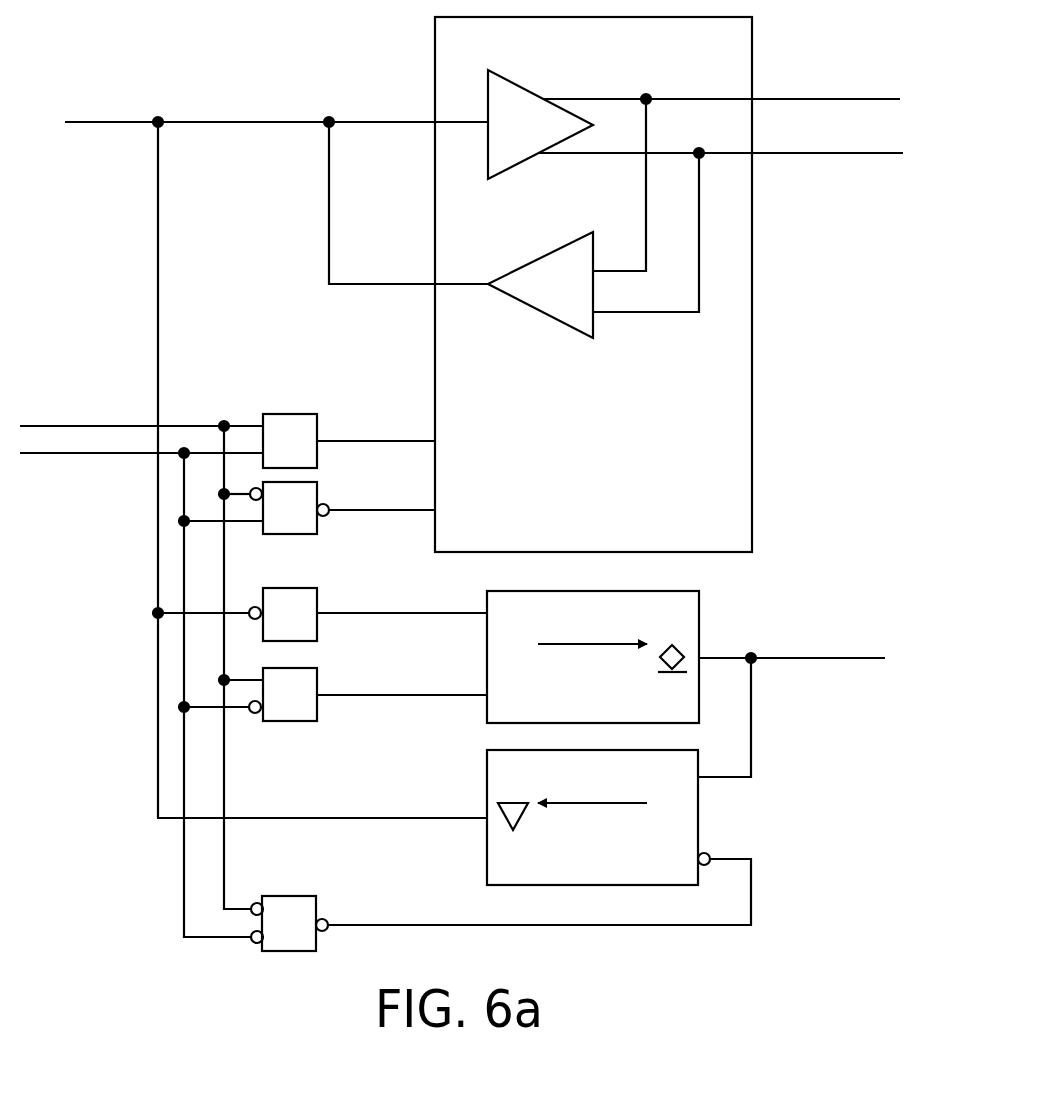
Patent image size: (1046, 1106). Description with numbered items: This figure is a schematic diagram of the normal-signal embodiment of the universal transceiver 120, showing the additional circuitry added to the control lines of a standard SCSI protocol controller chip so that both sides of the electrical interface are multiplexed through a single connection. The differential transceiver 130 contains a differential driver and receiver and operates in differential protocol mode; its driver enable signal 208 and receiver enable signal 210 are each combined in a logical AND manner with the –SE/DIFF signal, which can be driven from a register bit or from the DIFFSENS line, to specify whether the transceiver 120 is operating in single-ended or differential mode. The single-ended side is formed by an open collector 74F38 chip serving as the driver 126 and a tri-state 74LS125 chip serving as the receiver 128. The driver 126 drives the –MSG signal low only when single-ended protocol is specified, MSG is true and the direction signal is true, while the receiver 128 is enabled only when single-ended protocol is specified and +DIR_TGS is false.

The universal electrical interface system 120 is at (155, 1005).
The driver 126 is at (700, 618).
The receiver 128 is at (699, 829).
The differential transceiver 130 is at (752, 510).
The driver enable signal 208 is at (382, 441).
The receiver enable signal 210 is at (369, 510).